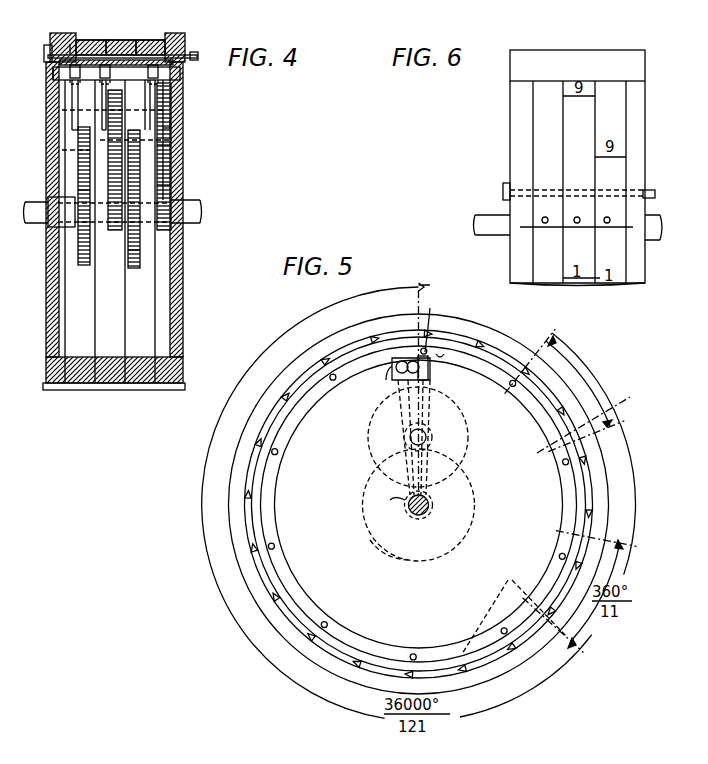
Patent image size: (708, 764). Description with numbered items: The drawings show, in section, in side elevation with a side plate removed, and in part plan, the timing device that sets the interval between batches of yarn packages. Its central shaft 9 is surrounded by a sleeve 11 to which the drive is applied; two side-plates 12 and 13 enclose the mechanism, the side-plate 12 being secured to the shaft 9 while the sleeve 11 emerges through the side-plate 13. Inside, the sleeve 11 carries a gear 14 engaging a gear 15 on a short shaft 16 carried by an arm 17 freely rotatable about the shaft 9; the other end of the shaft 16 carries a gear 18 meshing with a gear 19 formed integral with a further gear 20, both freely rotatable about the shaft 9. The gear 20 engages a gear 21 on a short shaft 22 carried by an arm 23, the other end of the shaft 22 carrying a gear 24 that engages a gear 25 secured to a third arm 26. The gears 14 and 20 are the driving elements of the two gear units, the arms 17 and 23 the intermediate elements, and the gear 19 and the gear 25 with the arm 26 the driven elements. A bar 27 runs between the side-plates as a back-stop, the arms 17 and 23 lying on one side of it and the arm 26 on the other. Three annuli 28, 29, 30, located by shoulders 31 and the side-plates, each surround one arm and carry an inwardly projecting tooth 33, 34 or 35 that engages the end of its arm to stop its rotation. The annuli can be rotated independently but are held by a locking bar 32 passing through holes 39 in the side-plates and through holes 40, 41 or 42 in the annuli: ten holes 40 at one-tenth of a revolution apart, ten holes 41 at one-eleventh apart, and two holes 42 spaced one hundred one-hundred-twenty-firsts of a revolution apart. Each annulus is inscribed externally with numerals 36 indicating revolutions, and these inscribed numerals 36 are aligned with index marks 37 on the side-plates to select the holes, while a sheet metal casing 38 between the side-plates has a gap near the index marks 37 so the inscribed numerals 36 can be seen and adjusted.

In FIG. 4, the central shaft 9 is at (37, 222).
In FIG. 6, the central shaft 9 is at (480, 232).
In FIG. 5, the central shaft 9 is at (426, 512).
In FIG. 4, the sleeve 11 is at (190, 202).
In FIG. 6, the sleeve 11 is at (650, 238).
In FIG. 5, the sleeve 11 is at (406, 500).
In FIG. 4, the side-plate 12 is at (45, 265).
In FIG. 6, the side-plate 12 is at (515, 137).
In FIG. 4, the side-plate 13 is at (183, 127).
In FIG. 6, the side-plate 13 is at (637, 147).
In FIG. 4, the gear 14 is at (186, 188).
In FIG. 5, the gear 14 is at (405, 528).
In FIG. 4, the gear 15 is at (182, 148).
In FIG. 5, the gear 15 is at (460, 430).
In FIG. 4, the short shaft 16 is at (172, 132).
In FIG. 4, the arm 17 is at (183, 94).
In FIG. 5, the arm 17 is at (432, 380).
In FIG. 4, the gear 18 is at (134, 125).
In FIG. 5, the gear 18 is at (440, 438).
In FIG. 4, the gear 19 is at (130, 266).
In FIG. 5, the gear 19 is at (466, 506).
In FIG. 4, the gear 20 is at (120, 240).
In FIG. 4, the gear 21 is at (100, 118).
In FIG. 4, the short shaft 22 is at (76, 137).
In FIG. 4, the arm 23 is at (60, 96).
In FIG. 4, the gear 24 is at (78, 150).
In FIG. 4, the gear 25 is at (78, 182).
In FIG. 4, the third arm 26 is at (70, 92).
In FIG. 5, the third arm 26 is at (386, 388).
In FIG. 4, the bar 27 is at (181, 76).
In FIG. 5, the bar 27 is at (392, 372).
In FIG. 4, the annulus 28 is at (148, 42).
In FIG. 6, the annulus 28 is at (610, 95).
In FIG. 5, the annulus 28 is at (277, 567).
In FIG. 4, the annulus 29 is at (126, 44).
In FIG. 6, the annulus 29 is at (571, 100).
In FIG. 4, the annulus 30 is at (94, 42).
In FIG. 6, the annulus 30 is at (548, 73).
In FIG. 4, the shoulders 31 is at (71, 42).
In FIG. 5, the shoulders 31 is at (578, 494).
In FIG. 4, the locking bar 32 is at (190, 56).
In FIG. 6, the locking bar 32 is at (651, 190).
In FIG. 5, the locking bar 32 is at (480, 322).
In FIG. 4, the tooth 33 is at (178, 44).
In FIG. 5, the tooth 33 is at (442, 357).
In FIG. 4, the tooth 34 is at (114, 42).
In FIG. 4, the tooth 35 is at (56, 40).
In FIG. 5, the tooth 35 is at (392, 358).
In FIG. 6, the figures 36 is at (600, 270).
In FIG. 5, the figures 36 is at (593, 392).
In FIG. 6, the index marks 37 is at (522, 228).
In FIG. 4, the sheet metal casing 38 is at (128, 390).
In FIG. 6, the sheet metal casing 38 is at (641, 73).
In FIG. 5, the sheet metal casing 38 is at (528, 665).
In FIG. 4, the holes 39 is at (196, 52).
In FIG. 5, the holes 40 is at (275, 547).
In FIG. 5, the holes 41 is at (514, 608).
In FIG. 5, the holes 42 is at (579, 431).